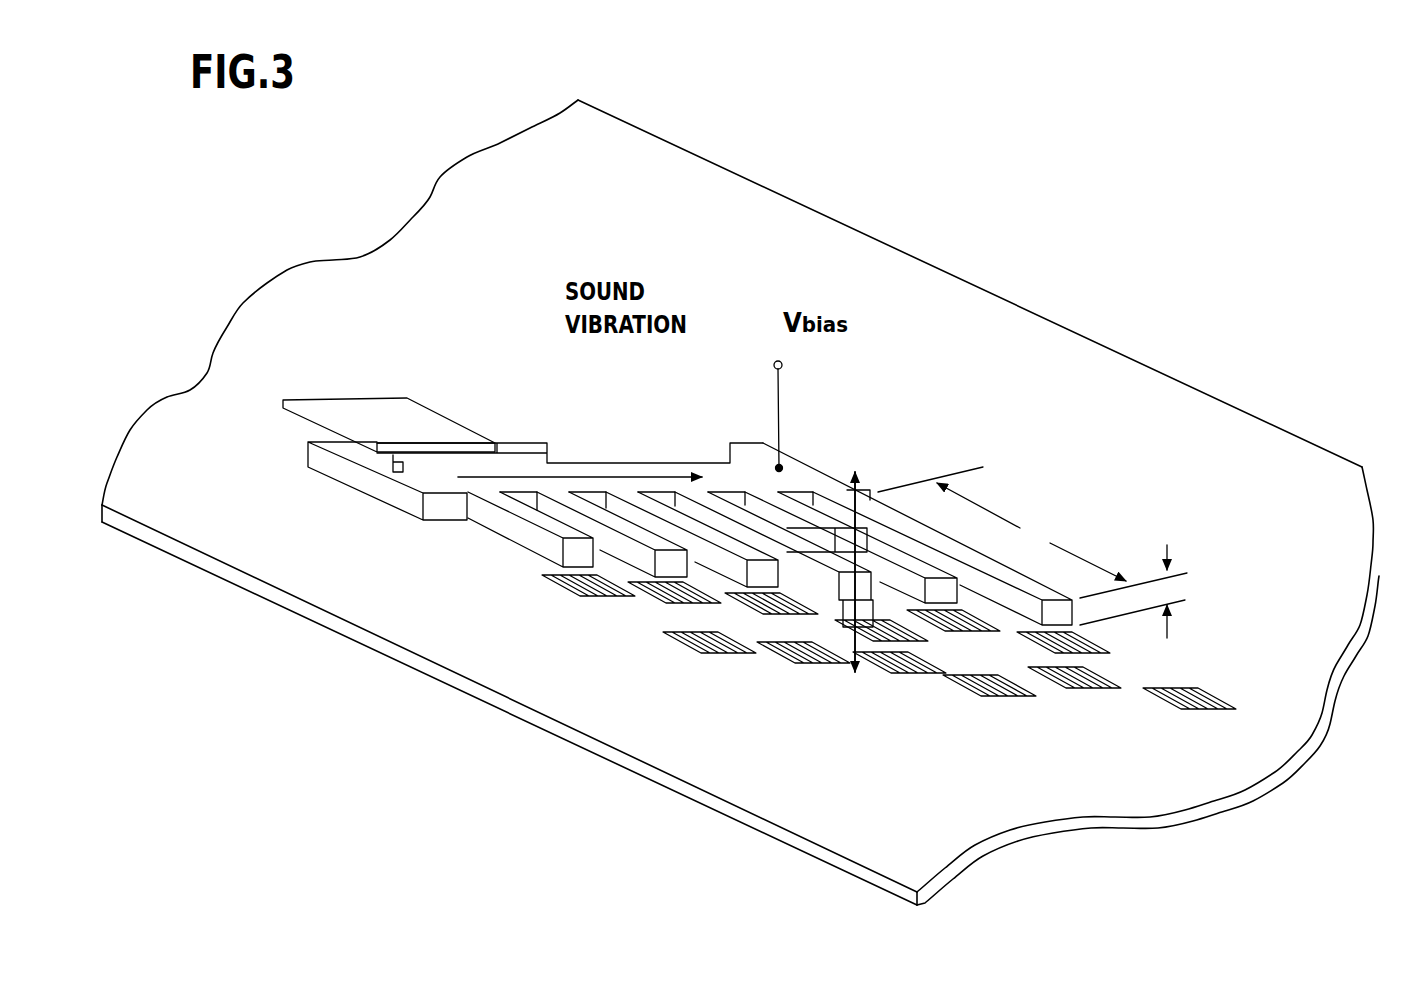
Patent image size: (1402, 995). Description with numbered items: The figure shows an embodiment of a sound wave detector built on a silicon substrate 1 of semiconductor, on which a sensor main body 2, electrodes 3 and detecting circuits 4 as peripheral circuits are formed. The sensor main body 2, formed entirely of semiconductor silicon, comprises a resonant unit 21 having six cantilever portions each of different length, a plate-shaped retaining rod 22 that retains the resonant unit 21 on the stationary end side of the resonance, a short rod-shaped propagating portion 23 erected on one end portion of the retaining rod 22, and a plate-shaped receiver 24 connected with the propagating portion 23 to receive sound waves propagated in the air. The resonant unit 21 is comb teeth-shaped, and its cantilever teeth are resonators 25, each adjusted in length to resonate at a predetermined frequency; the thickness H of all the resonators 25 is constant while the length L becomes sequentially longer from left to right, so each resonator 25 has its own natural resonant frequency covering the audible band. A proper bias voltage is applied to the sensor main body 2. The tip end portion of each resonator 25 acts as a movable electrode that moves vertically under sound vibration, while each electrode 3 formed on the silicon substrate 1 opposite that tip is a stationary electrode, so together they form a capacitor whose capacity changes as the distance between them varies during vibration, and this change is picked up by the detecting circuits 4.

The silicon substrate 1 is at (990, 313).
The sensor main body 2 is at (819, 454).
The electrodes 3 is at (573, 585).
The detecting circuits 4 is at (697, 648).
The resonant unit 21 is at (918, 516).
The retaining rod 22 is at (713, 468).
The propagating portion 23 is at (392, 460).
The receiver 24 is at (328, 398).
The resonators 25 is at (700, 490).